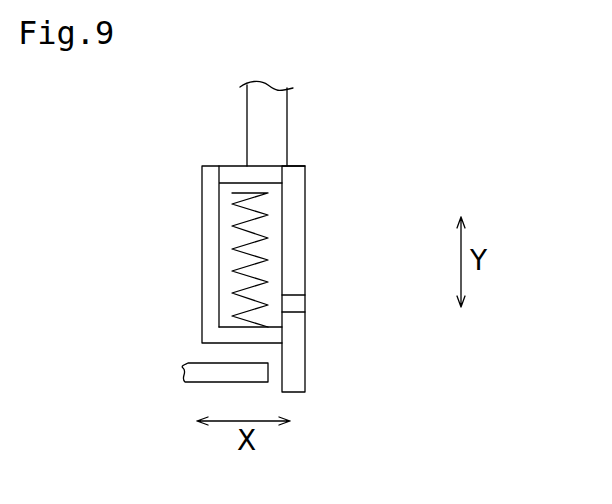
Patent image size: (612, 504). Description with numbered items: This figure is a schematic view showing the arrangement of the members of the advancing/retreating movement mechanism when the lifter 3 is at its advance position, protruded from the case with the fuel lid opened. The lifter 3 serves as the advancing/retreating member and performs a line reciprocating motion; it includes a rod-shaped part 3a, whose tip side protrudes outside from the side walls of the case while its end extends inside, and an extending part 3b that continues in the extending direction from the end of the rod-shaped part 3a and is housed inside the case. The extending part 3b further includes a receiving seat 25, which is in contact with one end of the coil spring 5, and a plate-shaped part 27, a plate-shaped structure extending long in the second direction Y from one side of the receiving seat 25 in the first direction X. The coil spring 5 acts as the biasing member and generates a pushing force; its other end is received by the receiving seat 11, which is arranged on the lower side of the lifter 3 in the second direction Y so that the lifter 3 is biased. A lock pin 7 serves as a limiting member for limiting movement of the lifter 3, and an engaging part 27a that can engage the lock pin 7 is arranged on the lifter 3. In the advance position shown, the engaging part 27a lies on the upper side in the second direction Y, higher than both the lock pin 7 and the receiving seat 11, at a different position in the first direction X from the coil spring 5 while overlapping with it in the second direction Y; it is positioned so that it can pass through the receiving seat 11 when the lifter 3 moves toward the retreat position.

The lifter 3 is at (335, 128).
The rod-shaped part 3a is at (267, 107).
The extending part 3b is at (322, 202).
The receiving seat 25 is at (232, 177).
The coil spring 5 is at (243, 237).
The plate-shaped part 27 is at (305, 235).
The engaging part 27a is at (305, 307).
The receiving seat 11 is at (240, 337).
The lock pin 7 is at (227, 381).